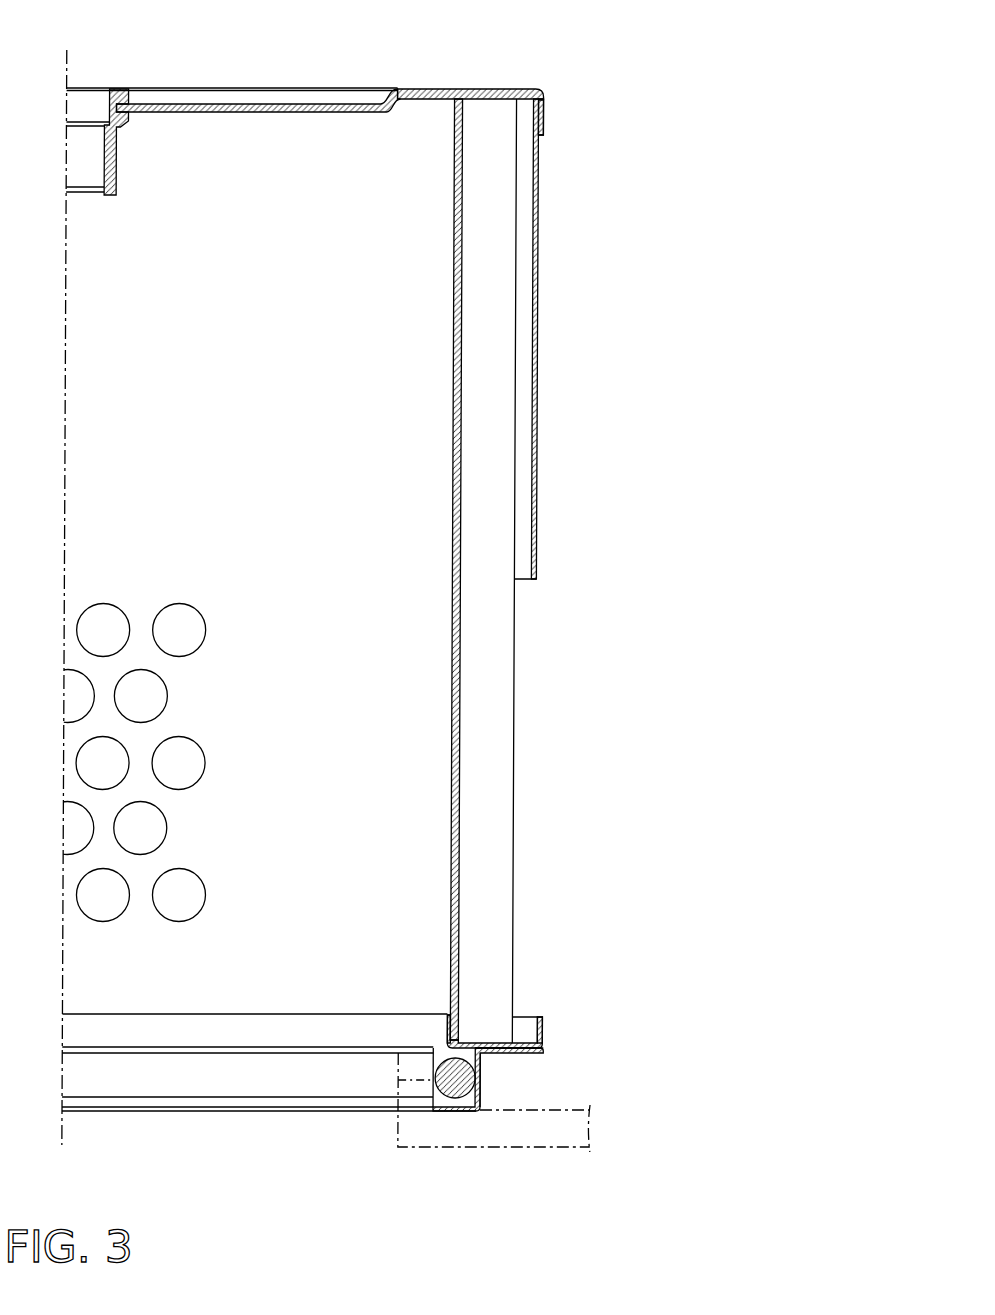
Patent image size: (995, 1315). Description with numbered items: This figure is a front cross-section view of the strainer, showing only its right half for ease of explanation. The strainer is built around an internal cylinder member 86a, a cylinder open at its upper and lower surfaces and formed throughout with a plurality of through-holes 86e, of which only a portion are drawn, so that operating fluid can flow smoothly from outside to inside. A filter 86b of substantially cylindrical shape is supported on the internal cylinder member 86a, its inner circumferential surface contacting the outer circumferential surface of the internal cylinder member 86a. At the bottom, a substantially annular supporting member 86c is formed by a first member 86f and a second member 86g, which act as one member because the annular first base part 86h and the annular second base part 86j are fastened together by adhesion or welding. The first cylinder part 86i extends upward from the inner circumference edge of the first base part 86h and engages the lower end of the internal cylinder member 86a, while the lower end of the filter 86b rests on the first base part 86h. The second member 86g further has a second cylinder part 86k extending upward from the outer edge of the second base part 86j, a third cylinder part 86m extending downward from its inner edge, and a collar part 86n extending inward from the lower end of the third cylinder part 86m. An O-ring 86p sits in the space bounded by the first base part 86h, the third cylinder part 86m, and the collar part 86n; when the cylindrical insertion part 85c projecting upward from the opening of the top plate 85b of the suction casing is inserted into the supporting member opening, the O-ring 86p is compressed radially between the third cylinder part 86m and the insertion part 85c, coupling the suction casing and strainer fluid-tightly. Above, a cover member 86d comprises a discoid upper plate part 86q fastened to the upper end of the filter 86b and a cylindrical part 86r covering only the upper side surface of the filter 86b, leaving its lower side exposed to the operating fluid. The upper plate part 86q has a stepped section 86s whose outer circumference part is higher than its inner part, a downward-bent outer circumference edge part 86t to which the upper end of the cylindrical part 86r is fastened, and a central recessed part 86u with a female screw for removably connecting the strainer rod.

The top plate 85b is at (585, 1135).
The insertion part 85c is at (403, 1080).
The internal cylinder member 86a is at (432, 721).
The filter 86b is at (520, 666).
The supporting member 86c is at (551, 1040).
The cover member 86d is at (554, 137).
The through-holes 86e is at (181, 870).
The first member 86f is at (443, 1035).
The second member 86g is at (507, 1059).
The first base part 86h is at (524, 1040).
The first cylinder part 86i is at (451, 1025).
The second base part 86j is at (527, 1053).
The second cylinder part 86k is at (547, 1032).
The third cylinder part 86m is at (483, 1082).
The collar part 86n is at (465, 1112).
The O-ring 86p is at (438, 1080).
The upper plate part 86q is at (436, 88).
The cylindrical part 86r is at (540, 321).
The stepped section 86s is at (384, 88).
The outer circumference edge part 86t is at (546, 113).
The recessed part 86u is at (101, 155).